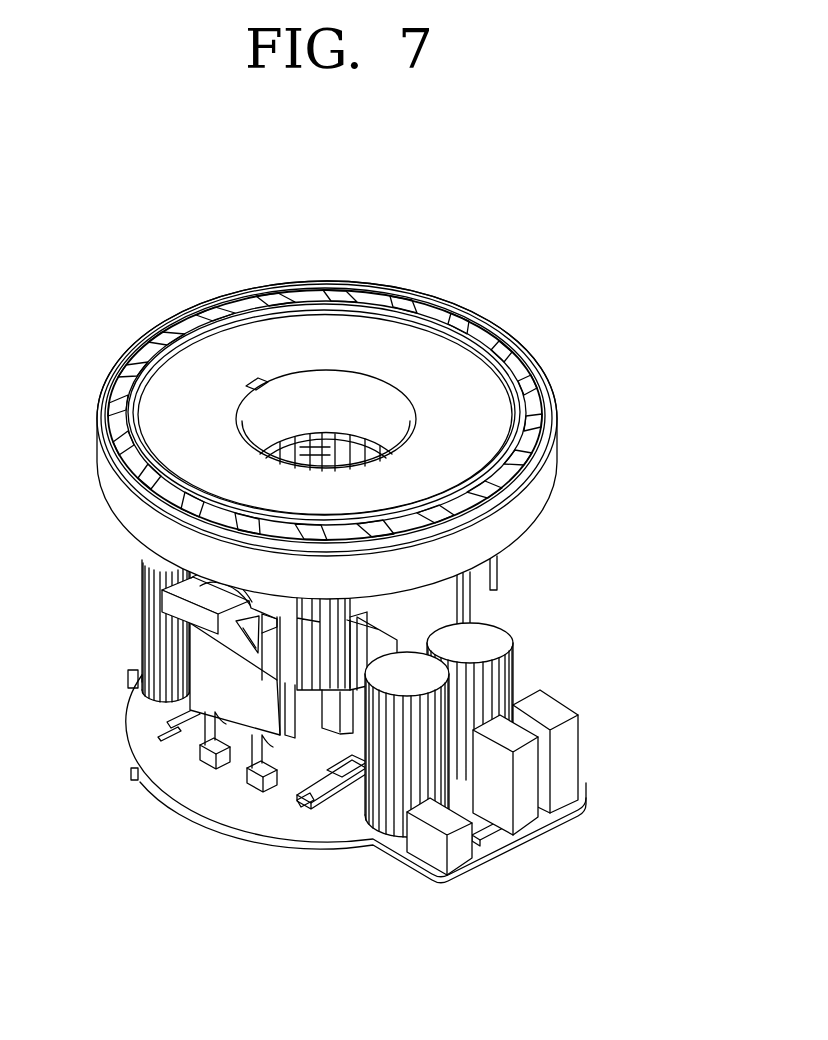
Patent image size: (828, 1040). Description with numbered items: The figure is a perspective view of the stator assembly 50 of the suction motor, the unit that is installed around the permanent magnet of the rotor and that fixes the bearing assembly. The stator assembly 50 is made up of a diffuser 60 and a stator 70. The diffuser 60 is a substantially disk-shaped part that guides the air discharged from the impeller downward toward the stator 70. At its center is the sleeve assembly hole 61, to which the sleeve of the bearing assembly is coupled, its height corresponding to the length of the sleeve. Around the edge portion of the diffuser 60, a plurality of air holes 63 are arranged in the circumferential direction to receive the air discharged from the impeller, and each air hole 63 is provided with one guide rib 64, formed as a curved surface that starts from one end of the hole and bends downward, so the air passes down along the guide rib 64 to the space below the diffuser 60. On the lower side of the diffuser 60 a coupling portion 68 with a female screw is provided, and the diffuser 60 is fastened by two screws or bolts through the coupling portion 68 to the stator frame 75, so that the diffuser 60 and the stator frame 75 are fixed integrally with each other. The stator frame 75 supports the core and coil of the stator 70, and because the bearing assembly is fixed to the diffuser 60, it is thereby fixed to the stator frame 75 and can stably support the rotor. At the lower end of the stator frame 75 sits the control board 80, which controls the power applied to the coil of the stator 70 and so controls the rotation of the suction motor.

The stator assembly 50 is at (371, 558).
The diffuser 60 is at (376, 416).
The sleeve assembly hole 61 is at (375, 397).
The air holes 63 is at (517, 361).
The guide ribs 64 is at (443, 313).
The coupling portion 68 is at (208, 585).
The stator 70 is at (535, 621).
The stator frame 75 is at (204, 678).
The control board 80 is at (146, 820).